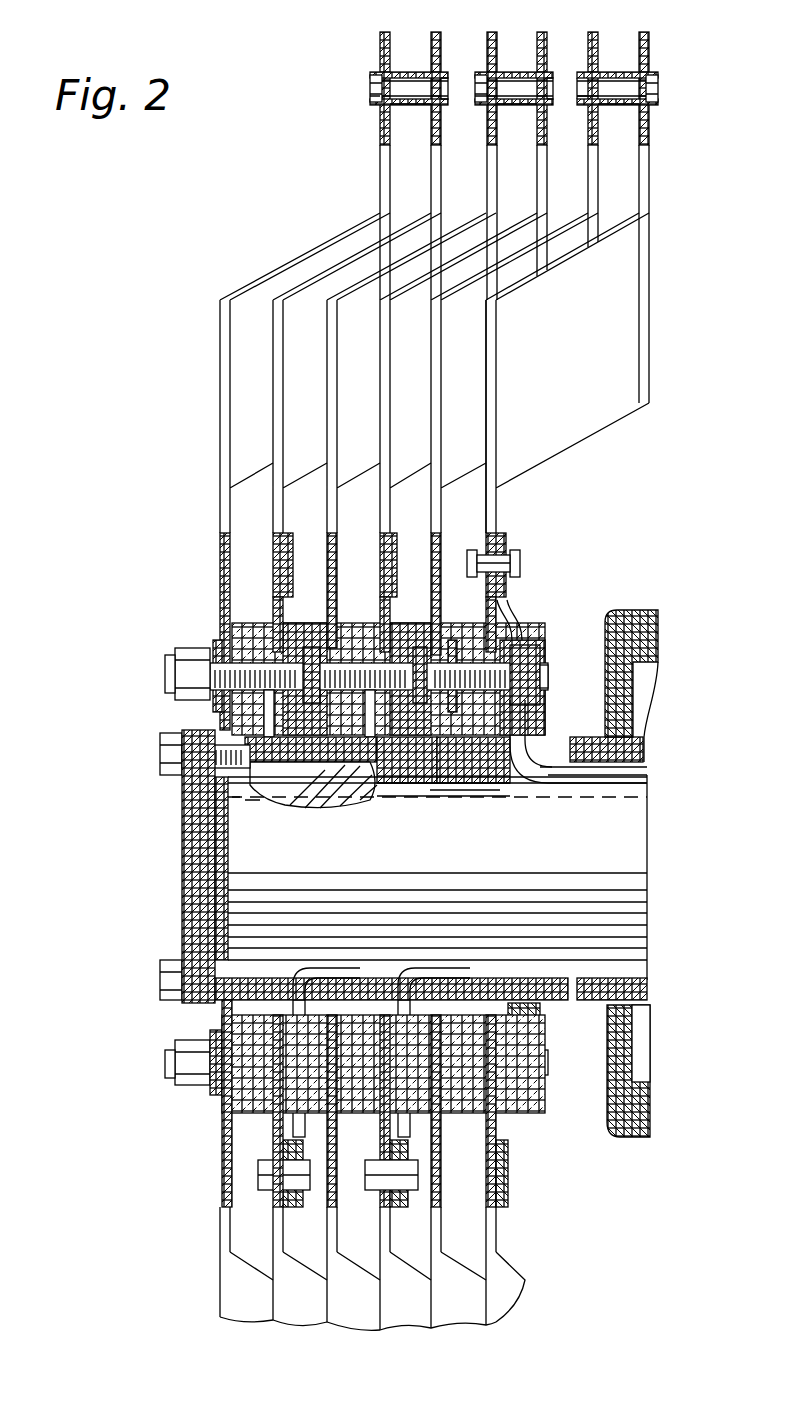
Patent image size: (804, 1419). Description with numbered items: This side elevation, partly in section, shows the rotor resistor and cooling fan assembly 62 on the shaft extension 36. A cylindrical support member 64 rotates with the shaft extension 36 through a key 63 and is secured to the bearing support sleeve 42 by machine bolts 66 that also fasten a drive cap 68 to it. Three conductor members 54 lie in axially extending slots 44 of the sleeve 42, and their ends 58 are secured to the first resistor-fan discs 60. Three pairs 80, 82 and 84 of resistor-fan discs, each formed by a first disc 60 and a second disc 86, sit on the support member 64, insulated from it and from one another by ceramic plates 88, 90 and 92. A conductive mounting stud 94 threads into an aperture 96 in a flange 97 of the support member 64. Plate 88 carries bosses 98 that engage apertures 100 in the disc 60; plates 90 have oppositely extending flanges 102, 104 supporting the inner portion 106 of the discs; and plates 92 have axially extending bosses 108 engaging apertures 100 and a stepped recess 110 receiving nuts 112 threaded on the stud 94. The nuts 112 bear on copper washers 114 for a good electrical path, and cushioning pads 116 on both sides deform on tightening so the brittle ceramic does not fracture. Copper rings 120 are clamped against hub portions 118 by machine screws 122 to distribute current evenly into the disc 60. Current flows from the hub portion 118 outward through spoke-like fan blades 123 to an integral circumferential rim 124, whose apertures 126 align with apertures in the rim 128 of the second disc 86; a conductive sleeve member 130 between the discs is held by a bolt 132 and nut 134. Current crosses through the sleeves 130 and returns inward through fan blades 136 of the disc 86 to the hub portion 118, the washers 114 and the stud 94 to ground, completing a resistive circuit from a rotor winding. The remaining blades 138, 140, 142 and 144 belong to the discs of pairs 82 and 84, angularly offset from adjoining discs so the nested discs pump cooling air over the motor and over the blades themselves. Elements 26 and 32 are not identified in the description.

The housing 26 is at (636, 615).
The outer wall 32 is at (656, 690).
The shaft extension 36 is at (647, 835).
The bearing support sleeve 42 is at (580, 740).
The axially extending slots 44 is at (647, 778).
The conductor members 54 is at (545, 790).
The other ends of the conductor members 58 is at (515, 610).
The first resistor-fan disc 60 is at (431, 145).
The resistor cooling fan assembly 62 is at (314, 236).
The key 63 is at (258, 790).
The cylindrical support member 64 is at (407, 760).
The machine bolts 66 is at (160, 753).
The drive cap 68 is at (190, 1003).
The first pair of resistor-fan discs 80 is at (611, 37).
The second pair of resistor-fan discs 82 is at (507, 37).
The third pair of resistor-fan discs 84 is at (414, 31).
The second resistor-fan disc 86 is at (380, 140).
The ceramic insulator plate 88 is at (485, 787).
The ceramic insulator plates 90 is at (252, 630).
The ceramic insulator plates 92 is at (305, 630).
The mounting stud 94 is at (208, 648).
The aperture 96 is at (548, 678).
The flange 97 is at (540, 655).
The bosses 98 is at (473, 760).
The apertures 100 is at (520, 645).
The flange 102 is at (313, 785).
The flange 104 is at (380, 785).
The inner portion 106 is at (311, 749).
The axially extending bosses 108 is at (266, 700).
The stepped recess 110 is at (437, 783).
The nuts 112 is at (190, 652).
The copper washers 114 is at (380, 590).
The cushioning pads 116 is at (235, 600).
The hub portions 118 is at (486, 515).
The copper rings 120 is at (500, 540).
The machine screws 122 is at (520, 558).
The fan blades 123 is at (604, 415).
The circumferential rim 124 is at (441, 40).
The apertures 126 is at (430, 104).
The rims 128 is at (380, 56).
The electrically conductive sleeve member 130 is at (405, 72).
The bolt 132 is at (370, 88).
The nut 134 is at (372, 102).
The fan blades 136 is at (482, 350).
The fan blades 138 is at (418, 403).
The fan blades 140 is at (366, 350).
The fan blades 142 is at (312, 403).
The fan blades 144 is at (262, 350).